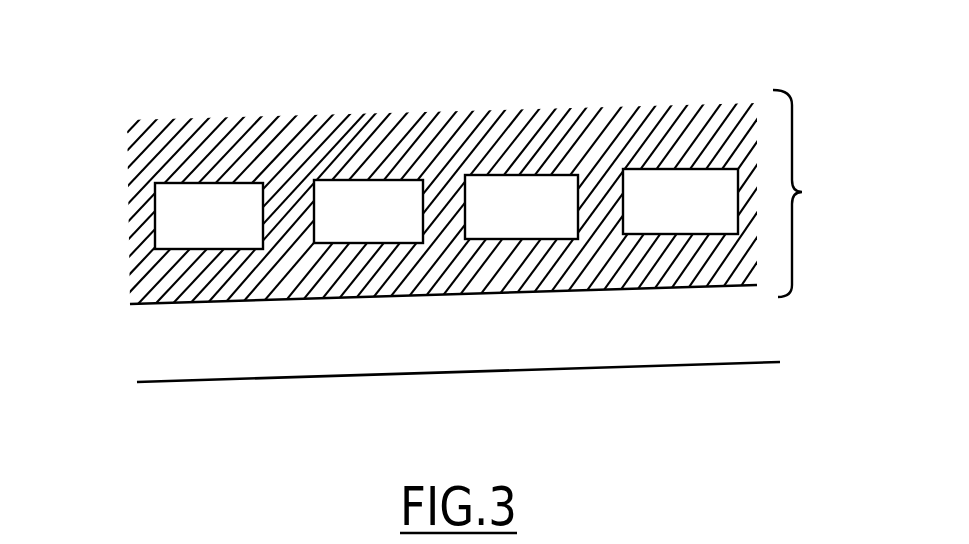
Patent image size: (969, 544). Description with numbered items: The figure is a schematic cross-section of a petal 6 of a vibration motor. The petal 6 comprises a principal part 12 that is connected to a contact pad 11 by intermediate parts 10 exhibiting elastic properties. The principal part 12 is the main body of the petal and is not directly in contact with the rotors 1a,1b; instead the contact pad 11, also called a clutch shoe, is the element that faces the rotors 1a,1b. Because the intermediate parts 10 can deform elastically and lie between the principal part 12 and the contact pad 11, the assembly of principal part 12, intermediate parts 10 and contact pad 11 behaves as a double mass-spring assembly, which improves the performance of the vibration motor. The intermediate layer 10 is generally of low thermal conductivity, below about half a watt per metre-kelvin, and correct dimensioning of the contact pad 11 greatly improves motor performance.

The petal 6 is at (812, 192).
The intermediate part 10 is at (446, 143).
The contact pad 11 is at (117, 280).
The principal part 12 is at (128, 118).
The rotors 1a,1b is at (710, 363).